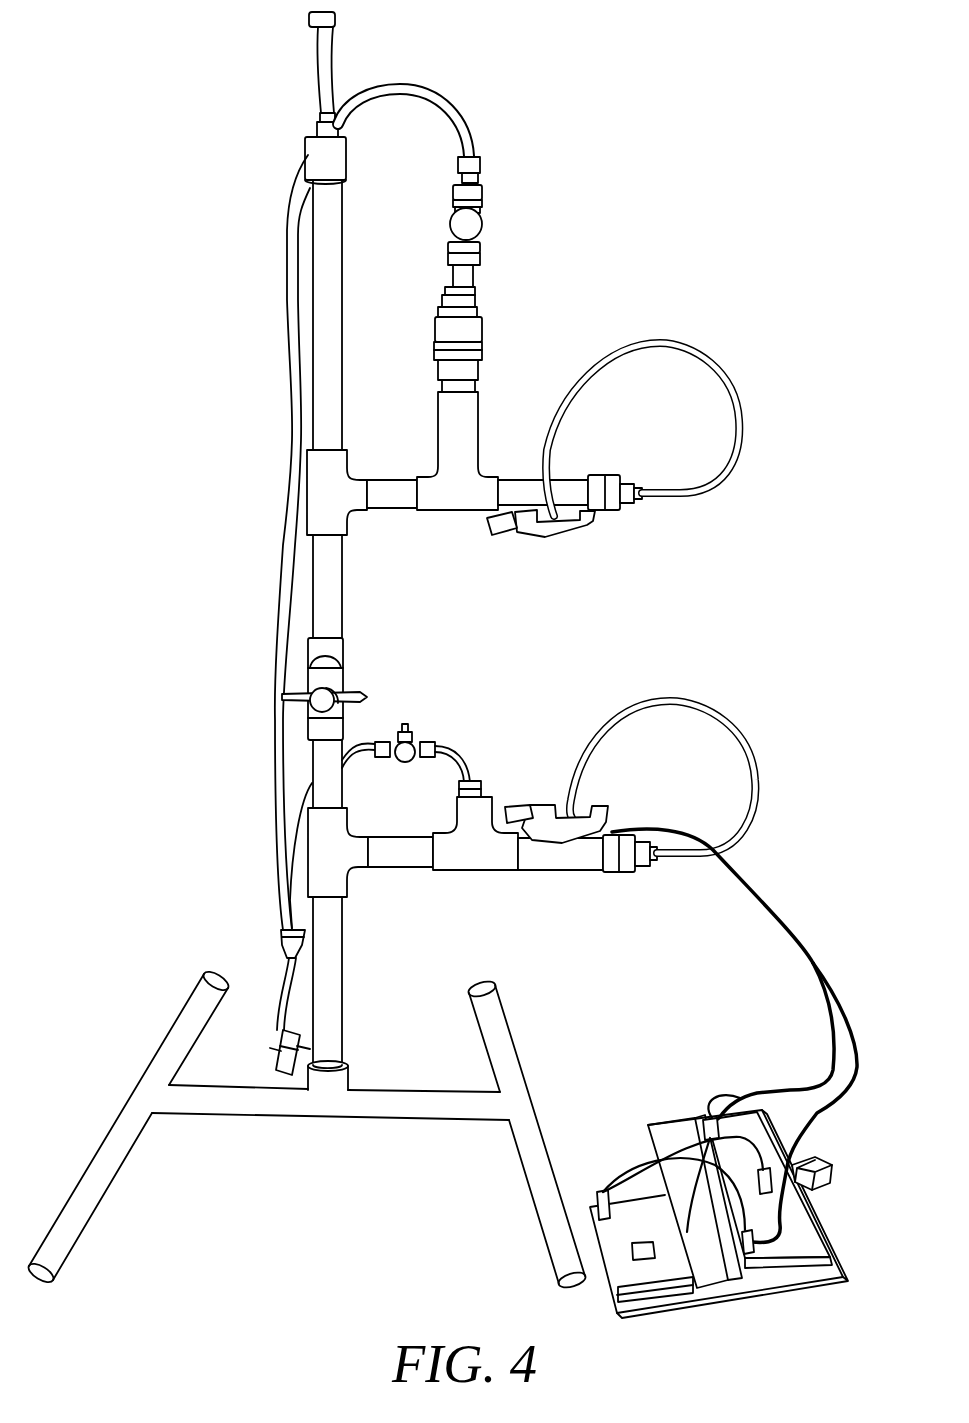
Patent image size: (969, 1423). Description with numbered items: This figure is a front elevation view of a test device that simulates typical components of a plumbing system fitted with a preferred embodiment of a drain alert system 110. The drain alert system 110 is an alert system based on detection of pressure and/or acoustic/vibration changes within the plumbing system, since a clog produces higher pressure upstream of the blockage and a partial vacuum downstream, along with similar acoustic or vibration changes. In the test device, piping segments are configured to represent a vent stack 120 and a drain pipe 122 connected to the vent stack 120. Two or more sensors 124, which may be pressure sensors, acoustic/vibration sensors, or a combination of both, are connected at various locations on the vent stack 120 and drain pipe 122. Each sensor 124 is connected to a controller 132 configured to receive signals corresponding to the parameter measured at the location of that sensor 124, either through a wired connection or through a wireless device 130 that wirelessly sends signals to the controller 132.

The drain alert system 110 is at (203, 205).
The vent stack 120 is at (328, 582).
The drain pipe 122 is at (463, 421).
The sensor 124 is at (556, 536).
The wireless device 130 is at (497, 533).
The controller 132 is at (760, 1315).